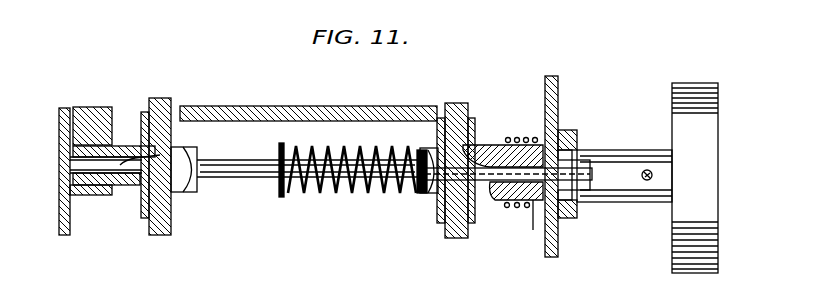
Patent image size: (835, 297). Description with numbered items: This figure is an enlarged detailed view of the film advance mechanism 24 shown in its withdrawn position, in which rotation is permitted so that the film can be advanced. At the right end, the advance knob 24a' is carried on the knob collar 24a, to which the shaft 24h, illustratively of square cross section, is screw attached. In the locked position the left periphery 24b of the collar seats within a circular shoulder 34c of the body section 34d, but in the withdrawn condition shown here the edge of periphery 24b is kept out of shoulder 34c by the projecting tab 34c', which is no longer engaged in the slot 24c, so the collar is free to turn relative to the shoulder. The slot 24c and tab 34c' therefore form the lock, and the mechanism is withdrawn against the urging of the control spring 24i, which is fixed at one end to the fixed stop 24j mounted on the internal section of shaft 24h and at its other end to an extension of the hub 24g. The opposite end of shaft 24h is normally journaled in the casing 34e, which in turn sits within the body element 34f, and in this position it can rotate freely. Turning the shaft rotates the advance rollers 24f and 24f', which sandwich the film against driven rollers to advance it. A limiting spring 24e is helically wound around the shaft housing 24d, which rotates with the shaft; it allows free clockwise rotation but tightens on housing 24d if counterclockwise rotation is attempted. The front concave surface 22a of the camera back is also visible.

The film advance mechanism 24 is at (470, 95).
The knob collar 24a is at (624, 150).
The advance knob 24a' is at (720, 152).
The left periphery 24b is at (579, 150).
The slot 24c is at (587, 181).
The shaft housing 24d is at (490, 150).
The limiting spring 24e is at (518, 137).
The advance roller 24f is at (447, 194).
The advance roller 24f' is at (166, 141).
The hub 24g is at (424, 198).
The shaft 24h is at (122, 165).
The control spring 24i is at (358, 193).
The fixed stop 24j is at (281, 197).
The front concave surface 22a is at (243, 106).
The circular shoulder 34c is at (582, 114).
The tab 34c' is at (597, 232).
The body section 34d is at (552, 78).
The casing 34e is at (118, 196).
The body element 34f is at (93, 108).